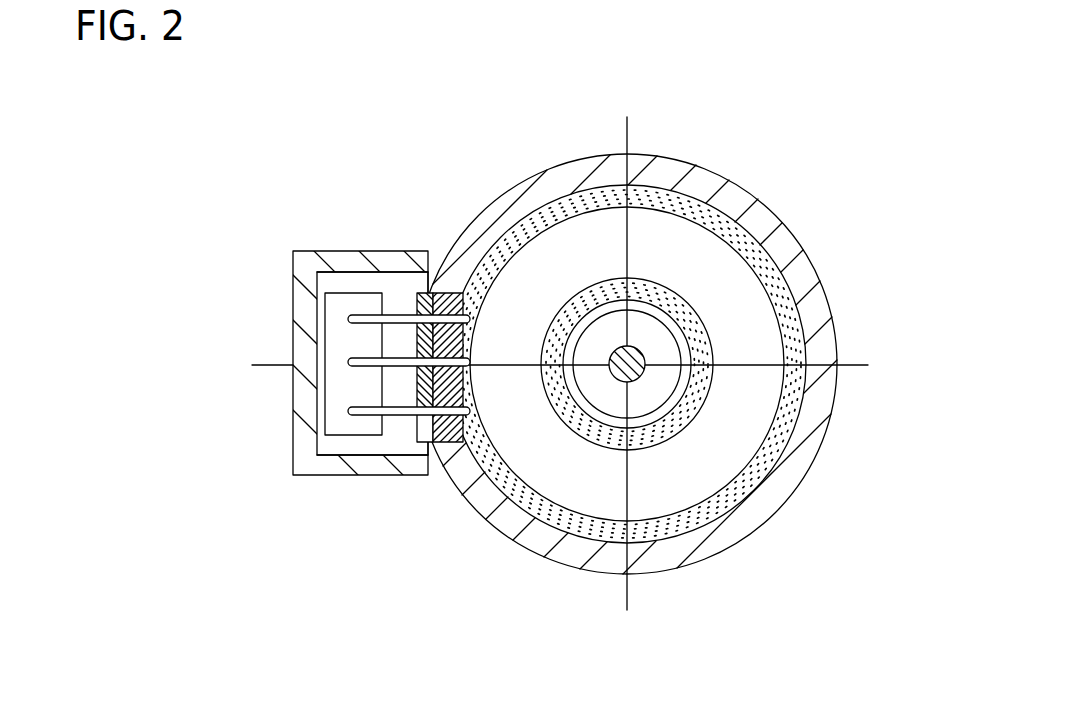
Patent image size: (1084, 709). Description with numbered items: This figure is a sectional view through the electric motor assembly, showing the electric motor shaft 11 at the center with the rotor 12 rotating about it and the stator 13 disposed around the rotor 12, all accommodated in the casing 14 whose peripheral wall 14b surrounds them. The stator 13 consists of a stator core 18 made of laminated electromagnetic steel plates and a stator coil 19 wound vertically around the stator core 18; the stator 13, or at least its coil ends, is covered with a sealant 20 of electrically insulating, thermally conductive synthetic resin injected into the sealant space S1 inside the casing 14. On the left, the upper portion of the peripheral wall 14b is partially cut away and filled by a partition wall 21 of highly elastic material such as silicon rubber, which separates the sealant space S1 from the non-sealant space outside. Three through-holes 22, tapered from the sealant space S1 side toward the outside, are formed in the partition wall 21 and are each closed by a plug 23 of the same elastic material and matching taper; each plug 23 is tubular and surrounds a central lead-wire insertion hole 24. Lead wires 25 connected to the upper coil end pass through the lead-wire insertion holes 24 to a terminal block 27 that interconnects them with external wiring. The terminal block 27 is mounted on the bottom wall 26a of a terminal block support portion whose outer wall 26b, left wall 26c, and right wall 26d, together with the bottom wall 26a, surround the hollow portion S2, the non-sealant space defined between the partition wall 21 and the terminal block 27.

The electric motor shaft 11 is at (641, 352).
The rotor 12 is at (676, 388).
The stator 13 is at (593, 108).
The casing 14 is at (816, 253).
The peripheral wall 14b is at (792, 490).
The stator core 18 is at (497, 273).
The stator coil 19 is at (567, 238).
The sealant 20 is at (718, 222).
The partition wall 21 is at (418, 296).
The through-hole 22 is at (430, 296).
The plug 23 is at (492, 355).
The lead-wire insertion hole 24 is at (499, 385).
The lead wire 25 is at (362, 417).
The bottom wall 26a is at (382, 443).
The outer wall 26b is at (300, 288).
The left wall 26c is at (357, 260).
The right wall 26d is at (336, 477).
The terminal block 27 is at (323, 325).
The sealant space S1 is at (462, 297).
The hollow portion S2 is at (345, 283).